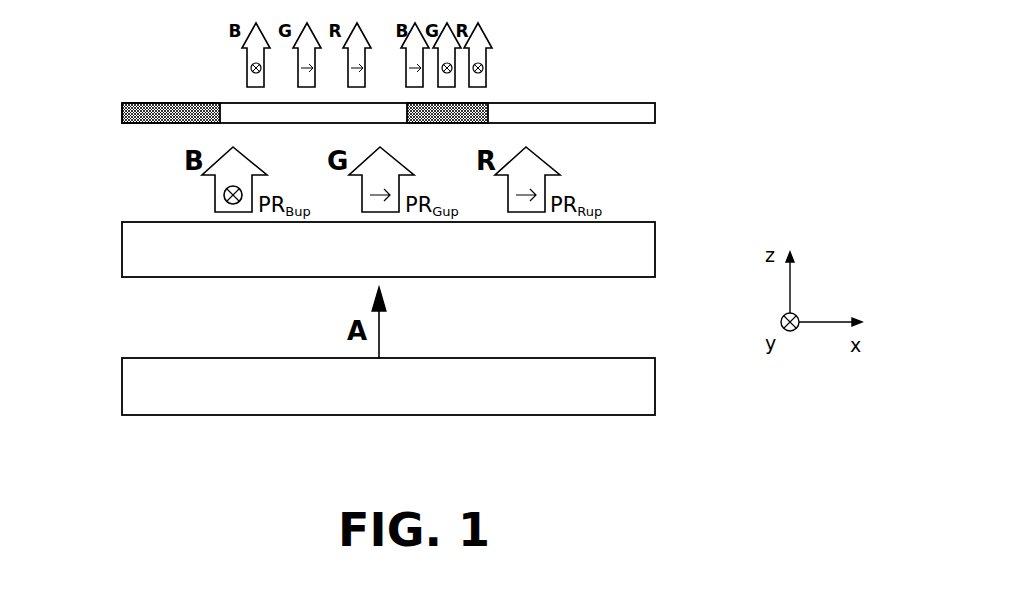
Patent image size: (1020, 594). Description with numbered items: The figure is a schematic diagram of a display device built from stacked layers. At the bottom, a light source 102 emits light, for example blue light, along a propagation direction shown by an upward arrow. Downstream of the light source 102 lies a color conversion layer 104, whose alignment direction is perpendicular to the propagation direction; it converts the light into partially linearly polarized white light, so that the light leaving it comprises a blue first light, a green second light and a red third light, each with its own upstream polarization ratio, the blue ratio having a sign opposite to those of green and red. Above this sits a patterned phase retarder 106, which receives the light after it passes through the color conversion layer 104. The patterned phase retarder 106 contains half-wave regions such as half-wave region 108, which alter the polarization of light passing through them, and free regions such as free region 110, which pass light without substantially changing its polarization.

The light source 102 is at (657, 390).
The color conversion layer 104 is at (657, 248).
The patterned phase retarder 106 is at (657, 113).
The half-wave region 108 is at (488, 102).
The free region 110 is at (221, 103).